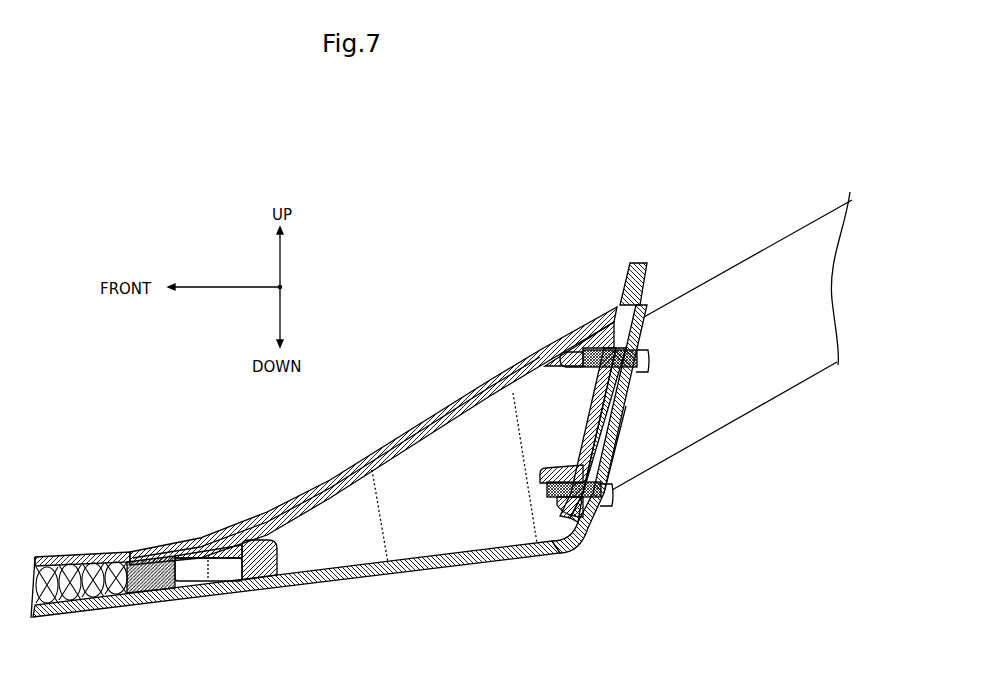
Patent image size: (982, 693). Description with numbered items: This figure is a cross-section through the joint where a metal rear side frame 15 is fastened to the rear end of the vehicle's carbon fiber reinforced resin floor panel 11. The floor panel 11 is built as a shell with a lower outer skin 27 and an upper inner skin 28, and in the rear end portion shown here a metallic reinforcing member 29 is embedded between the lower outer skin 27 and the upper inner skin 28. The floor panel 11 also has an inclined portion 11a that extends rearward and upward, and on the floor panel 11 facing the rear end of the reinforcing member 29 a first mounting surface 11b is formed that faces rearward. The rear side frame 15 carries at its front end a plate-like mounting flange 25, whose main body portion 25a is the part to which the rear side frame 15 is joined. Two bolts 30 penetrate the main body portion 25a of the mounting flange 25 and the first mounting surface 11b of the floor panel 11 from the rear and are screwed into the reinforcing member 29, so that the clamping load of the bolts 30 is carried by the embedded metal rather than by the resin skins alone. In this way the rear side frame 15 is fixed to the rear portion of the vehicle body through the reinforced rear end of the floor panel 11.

The floor panel 11 is at (107, 546).
The inclined portion 11a is at (648, 276).
The first mounting surface 11b is at (596, 418).
The rear side frame 15 is at (777, 257).
The mounting flange 25 is at (626, 406).
The main body portion 25a is at (616, 440).
The lower outer skin 27 is at (418, 571).
The upper inner skin 28 is at (368, 452).
The reinforcing member 29 is at (427, 438).
The bolt 30 is at (650, 364).